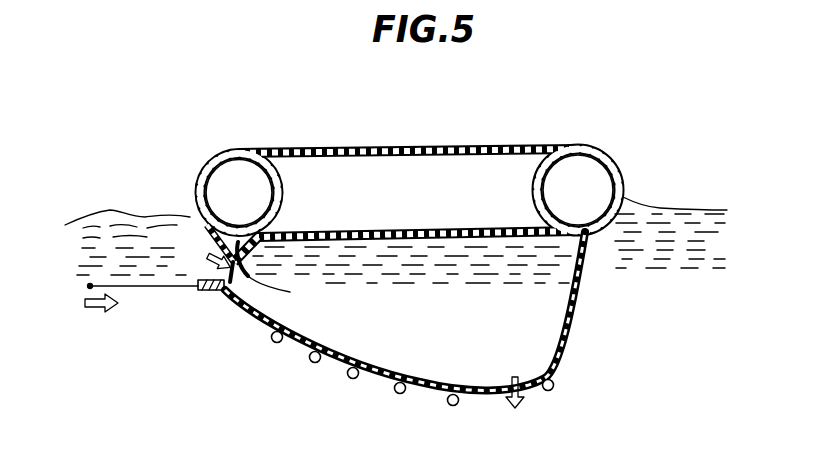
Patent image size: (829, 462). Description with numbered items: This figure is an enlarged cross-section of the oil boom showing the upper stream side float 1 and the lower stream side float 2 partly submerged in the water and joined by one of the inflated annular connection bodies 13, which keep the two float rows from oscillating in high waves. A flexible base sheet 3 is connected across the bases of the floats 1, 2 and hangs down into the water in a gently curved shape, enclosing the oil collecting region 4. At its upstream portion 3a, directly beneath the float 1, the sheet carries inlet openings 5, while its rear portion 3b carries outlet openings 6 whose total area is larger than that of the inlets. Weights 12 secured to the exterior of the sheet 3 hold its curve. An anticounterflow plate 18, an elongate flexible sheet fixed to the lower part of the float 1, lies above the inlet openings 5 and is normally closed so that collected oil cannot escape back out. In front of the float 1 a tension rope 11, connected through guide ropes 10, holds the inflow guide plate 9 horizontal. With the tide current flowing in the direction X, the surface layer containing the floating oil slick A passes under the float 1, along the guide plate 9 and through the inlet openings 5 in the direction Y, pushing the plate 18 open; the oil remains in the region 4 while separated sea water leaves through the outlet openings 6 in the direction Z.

The upper stream side float 1 is at (244, 149).
The lower stream side float 2 is at (601, 147).
The flexible base sheet 3 is at (431, 339).
The upper stream side portion of the flexible base sheet 3a is at (351, 376).
The rear portion of the flexible base sheet 3b is at (571, 331).
The oil collecting region 4 is at (463, 262).
The inlet openings 5 is at (210, 230).
The outlet openings 6 is at (553, 389).
The inflow guide plate 9 is at (208, 290).
The guide ropes 10 is at (160, 287).
The tension rope 11 is at (387, 240).
The weights 12 is at (313, 363).
The connection bodies 13 is at (343, 150).
The anticounterflow plate 18 is at (277, 273).
The floating oil slick A is at (398, 262).
The direction of tide current flow X is at (103, 315).
The inflow direction Y is at (209, 261).
The outflow direction Z is at (514, 411).